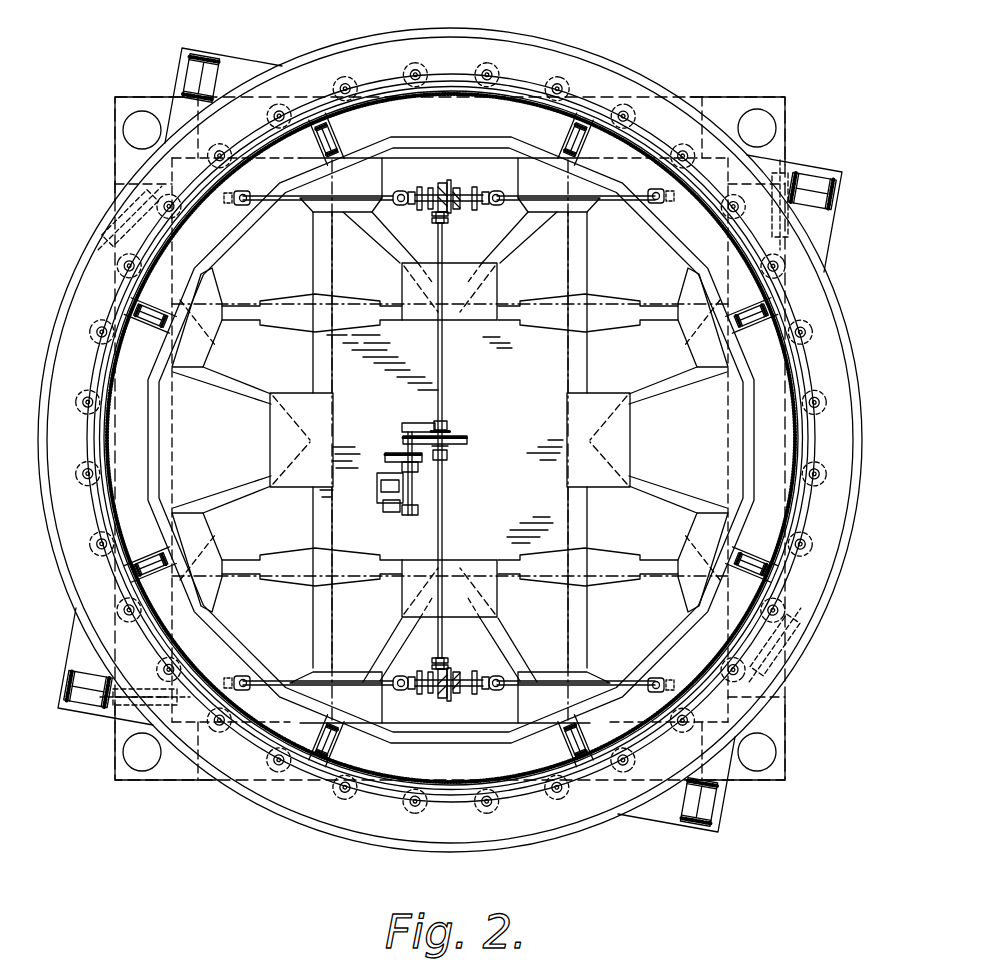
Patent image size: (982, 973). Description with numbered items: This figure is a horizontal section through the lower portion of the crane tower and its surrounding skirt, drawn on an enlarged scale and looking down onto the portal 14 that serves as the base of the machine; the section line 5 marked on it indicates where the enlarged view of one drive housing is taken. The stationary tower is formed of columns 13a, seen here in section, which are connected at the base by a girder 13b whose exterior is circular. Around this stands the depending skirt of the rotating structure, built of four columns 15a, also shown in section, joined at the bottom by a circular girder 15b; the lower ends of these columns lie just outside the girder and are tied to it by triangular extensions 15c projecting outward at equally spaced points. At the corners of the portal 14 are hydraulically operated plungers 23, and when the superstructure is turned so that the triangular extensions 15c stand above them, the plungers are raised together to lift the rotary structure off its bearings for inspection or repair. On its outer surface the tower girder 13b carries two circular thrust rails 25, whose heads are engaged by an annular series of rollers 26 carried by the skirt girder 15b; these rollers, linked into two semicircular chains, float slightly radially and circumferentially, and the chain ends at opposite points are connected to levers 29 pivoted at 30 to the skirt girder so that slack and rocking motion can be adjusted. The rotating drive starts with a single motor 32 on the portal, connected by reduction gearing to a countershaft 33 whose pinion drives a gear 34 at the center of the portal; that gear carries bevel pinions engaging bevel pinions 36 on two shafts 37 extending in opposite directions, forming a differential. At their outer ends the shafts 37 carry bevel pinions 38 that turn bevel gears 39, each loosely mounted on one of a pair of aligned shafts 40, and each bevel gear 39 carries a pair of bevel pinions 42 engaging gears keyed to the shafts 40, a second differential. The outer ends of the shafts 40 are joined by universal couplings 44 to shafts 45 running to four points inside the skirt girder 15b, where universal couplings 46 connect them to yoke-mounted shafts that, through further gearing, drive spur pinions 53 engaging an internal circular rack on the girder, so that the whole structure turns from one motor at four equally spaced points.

The section line 5— 5 is at (243, 655).
The tower columns 13a is at (742, 330).
The tower girder 13b is at (748, 416).
The portal 14 is at (697, 98).
The skirt columns 15a is at (207, 63).
The skirt girder 15b is at (597, 852).
The triangular extensions 15c is at (788, 167).
The hydraulically operated plungers 23 is at (142, 112).
The thrust rails 25 is at (793, 361).
The rollers 26 is at (815, 393).
The levers 29 is at (429, 498).
The lever pivots 30 is at (777, 626).
The motor 32 is at (380, 503).
The countershaft 33 is at (418, 488).
The gear 34 is at (470, 440).
The bevel pinions 36 is at (452, 430).
The shafts 37 is at (443, 389).
The bevel pinions 38 is at (436, 214).
The bevel gears 39 is at (454, 192).
The aligned shafts 40 is at (478, 214).
The bevel pinions 42 is at (442, 188).
The universal couplings 44 is at (407, 180).
The shafts 45 is at (355, 202).
The universal couplings 46 is at (245, 206).
The spur pinions 53 is at (212, 676).